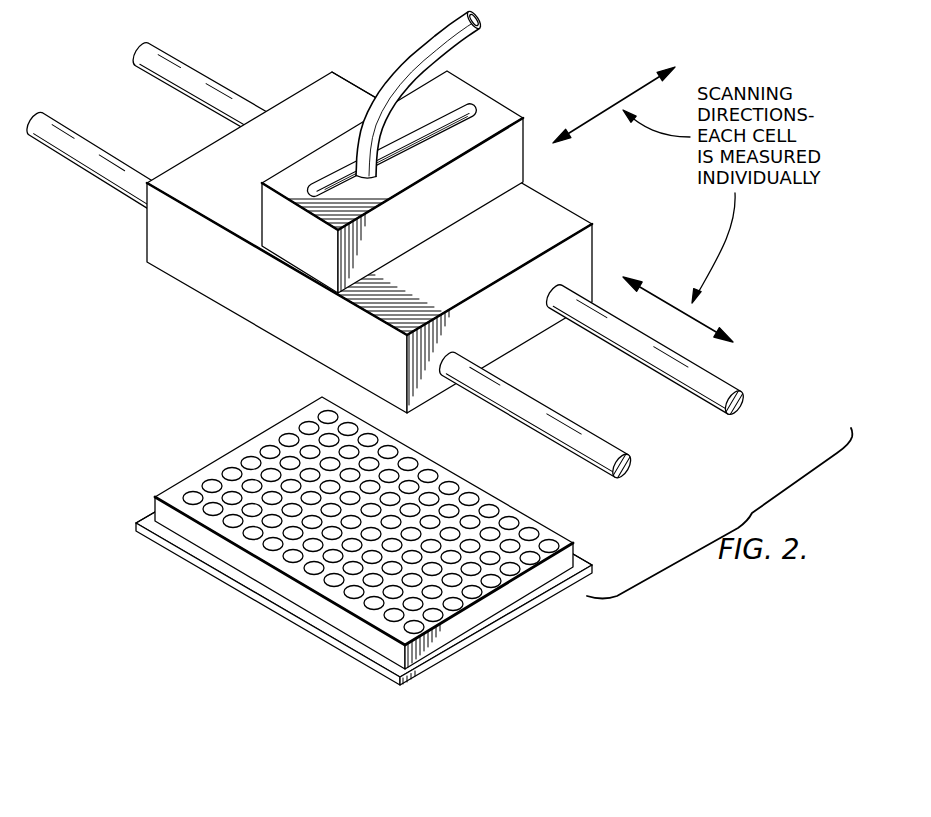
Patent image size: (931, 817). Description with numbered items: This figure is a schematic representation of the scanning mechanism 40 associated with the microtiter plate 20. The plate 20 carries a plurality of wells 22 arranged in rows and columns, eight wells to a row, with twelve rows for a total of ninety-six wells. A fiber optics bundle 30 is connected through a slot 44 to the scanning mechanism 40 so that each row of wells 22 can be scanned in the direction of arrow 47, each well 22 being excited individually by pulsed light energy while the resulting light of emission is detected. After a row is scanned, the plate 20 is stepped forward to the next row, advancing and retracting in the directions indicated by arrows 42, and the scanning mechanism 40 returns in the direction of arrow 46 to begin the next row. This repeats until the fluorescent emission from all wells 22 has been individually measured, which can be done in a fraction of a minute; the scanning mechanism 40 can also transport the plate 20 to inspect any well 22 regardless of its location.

The microtiter plate 20 is at (233, 594).
The wells 22 is at (268, 444).
The fiber optics bundle 30 is at (402, 50).
The scanning mechanism 40 is at (510, 110).
The arrows 42 is at (666, 300).
The slot 44 is at (464, 104).
The arrow 46 is at (557, 135).
The arrow 47 is at (664, 69).